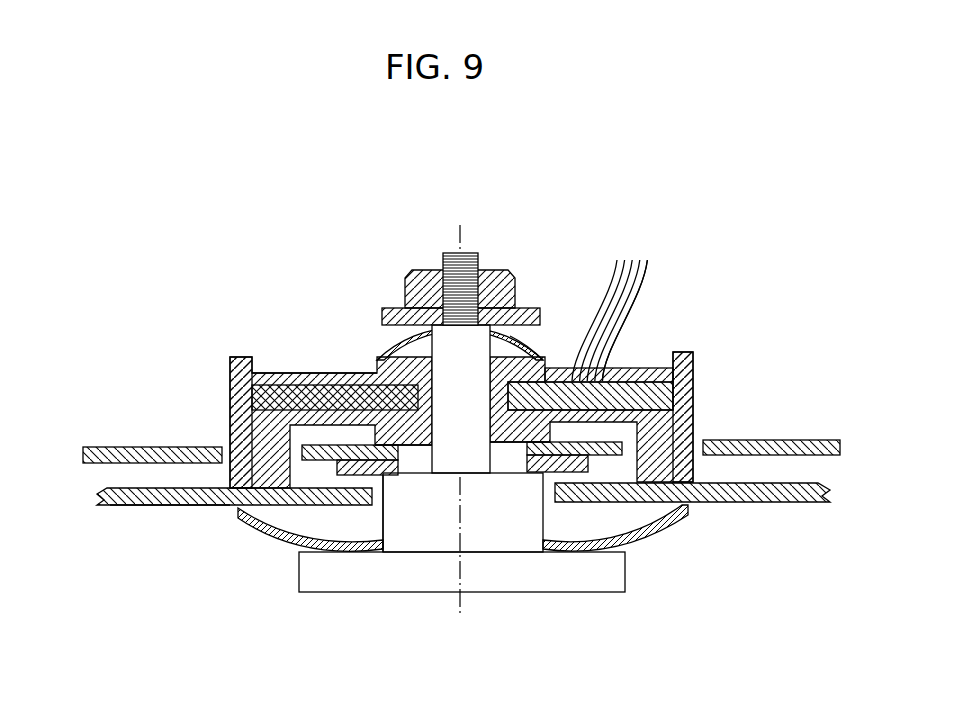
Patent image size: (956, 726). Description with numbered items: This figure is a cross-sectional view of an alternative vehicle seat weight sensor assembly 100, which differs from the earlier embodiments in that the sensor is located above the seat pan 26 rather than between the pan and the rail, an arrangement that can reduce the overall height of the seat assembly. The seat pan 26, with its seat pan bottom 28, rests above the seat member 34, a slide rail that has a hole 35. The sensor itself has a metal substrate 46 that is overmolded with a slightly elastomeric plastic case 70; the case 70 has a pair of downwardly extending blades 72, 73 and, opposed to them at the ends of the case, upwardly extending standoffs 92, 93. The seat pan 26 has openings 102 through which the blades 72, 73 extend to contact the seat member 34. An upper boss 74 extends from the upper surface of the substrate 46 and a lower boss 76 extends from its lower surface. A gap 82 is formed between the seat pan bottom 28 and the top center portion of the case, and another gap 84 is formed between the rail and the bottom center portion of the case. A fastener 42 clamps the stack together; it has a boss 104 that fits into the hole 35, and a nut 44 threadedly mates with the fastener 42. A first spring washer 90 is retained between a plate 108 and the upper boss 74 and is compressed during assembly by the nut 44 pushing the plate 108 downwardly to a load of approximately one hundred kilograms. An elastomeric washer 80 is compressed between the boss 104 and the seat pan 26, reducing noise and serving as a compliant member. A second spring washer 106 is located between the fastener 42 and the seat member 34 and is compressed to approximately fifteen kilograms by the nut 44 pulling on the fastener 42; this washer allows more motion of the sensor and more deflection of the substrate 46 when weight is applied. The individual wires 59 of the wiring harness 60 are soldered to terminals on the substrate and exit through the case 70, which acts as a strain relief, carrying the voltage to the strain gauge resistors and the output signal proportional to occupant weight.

The seat pan 26 is at (83, 457).
The seat pan bottom 28 is at (98, 447).
The seat member 34 is at (125, 512).
The hole 35 is at (378, 510).
The fastener 42 is at (529, 592).
The nut 44 is at (403, 278).
The metal substrate 46 is at (697, 397).
The wires 59 is at (622, 262).
The wiring harness 60 is at (645, 283).
The case 70 is at (696, 412).
The blade 72 is at (228, 428).
The blade 73 is at (695, 468).
The upper boss 74 is at (377, 362).
The lower boss 76 is at (513, 432).
The elastomeric washer 80 is at (353, 477).
The gap 82 is at (328, 357).
The gap 84 is at (310, 480).
The first spring washer 90 is at (543, 350).
The standoff 92 is at (228, 365).
The standoff 93 is at (695, 362).
The weight sensor assembly 100 is at (230, 390).
The openings 102 is at (703, 447).
The boss 104 is at (412, 520).
The second spring washer 106 is at (638, 525).
The plate 108 is at (390, 306).